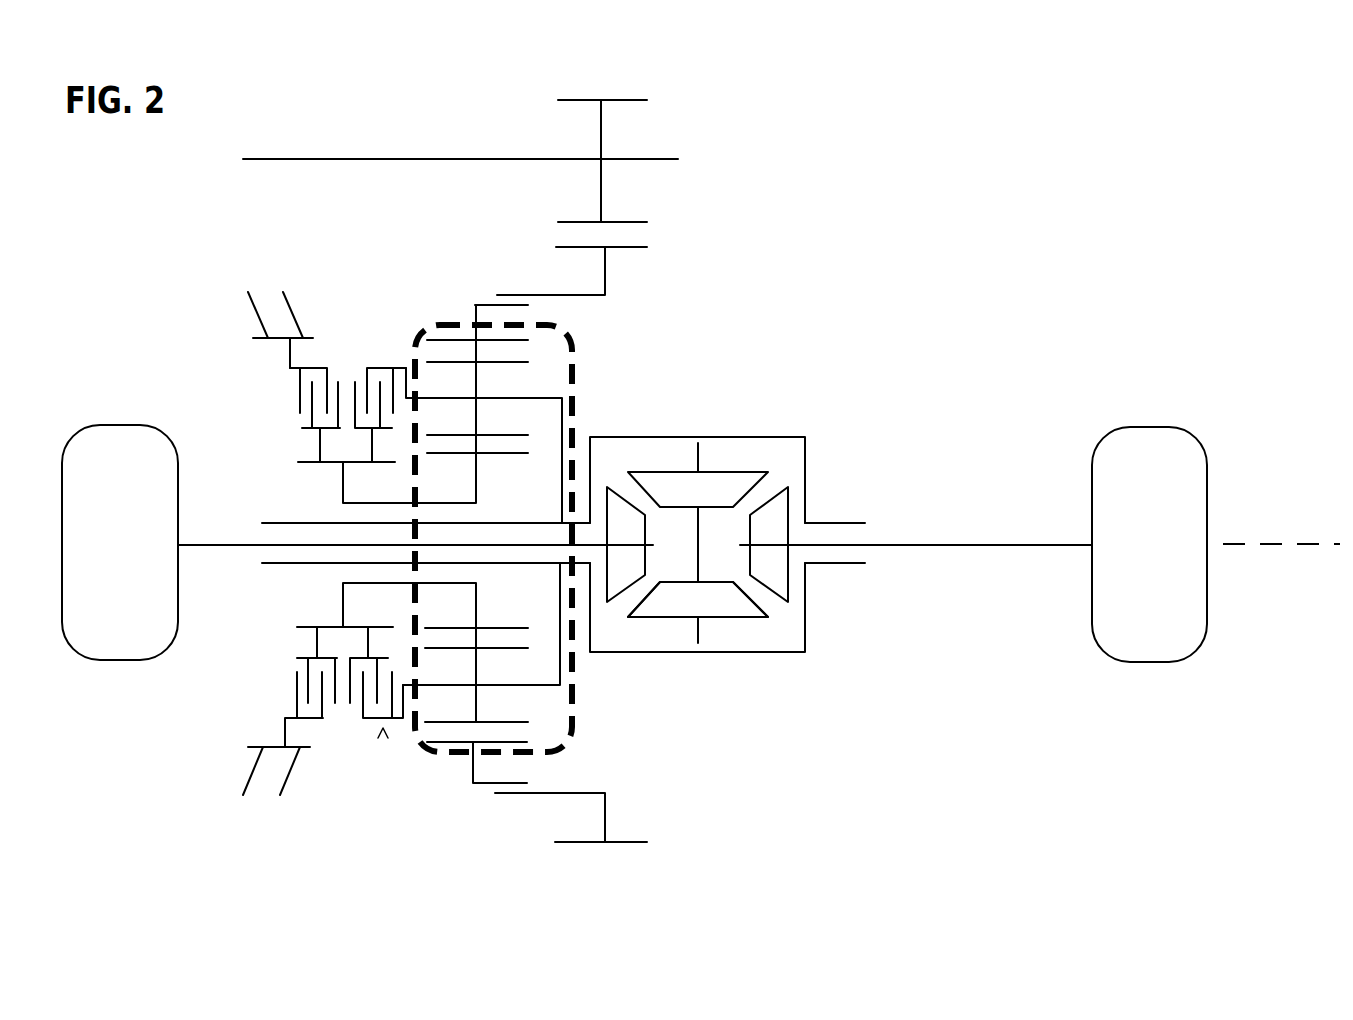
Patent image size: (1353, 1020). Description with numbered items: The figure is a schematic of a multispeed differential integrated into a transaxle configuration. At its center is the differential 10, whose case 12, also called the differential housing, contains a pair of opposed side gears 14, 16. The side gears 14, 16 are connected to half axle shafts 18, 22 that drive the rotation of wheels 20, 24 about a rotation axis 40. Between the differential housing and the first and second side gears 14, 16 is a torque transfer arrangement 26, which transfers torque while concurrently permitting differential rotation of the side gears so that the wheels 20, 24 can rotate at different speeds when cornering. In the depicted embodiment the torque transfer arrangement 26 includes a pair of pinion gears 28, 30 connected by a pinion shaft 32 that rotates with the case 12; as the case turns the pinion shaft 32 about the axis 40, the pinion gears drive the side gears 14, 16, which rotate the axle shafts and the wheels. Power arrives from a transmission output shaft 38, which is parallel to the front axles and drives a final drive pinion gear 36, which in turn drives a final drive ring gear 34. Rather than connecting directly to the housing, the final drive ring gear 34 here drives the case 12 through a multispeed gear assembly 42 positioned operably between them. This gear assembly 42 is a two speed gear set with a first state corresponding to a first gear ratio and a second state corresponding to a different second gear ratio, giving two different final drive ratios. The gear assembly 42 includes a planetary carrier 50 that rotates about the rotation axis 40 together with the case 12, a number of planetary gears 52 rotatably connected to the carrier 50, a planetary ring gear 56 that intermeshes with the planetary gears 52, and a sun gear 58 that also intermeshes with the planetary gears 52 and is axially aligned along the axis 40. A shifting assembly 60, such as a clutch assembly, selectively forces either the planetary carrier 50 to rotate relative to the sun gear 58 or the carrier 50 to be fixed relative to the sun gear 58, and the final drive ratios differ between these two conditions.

The differential 10 is at (751, 549).
The case 12 is at (770, 435).
The first side gear 14 is at (617, 597).
The second side gear 16 is at (785, 578).
The half axle shaft 18 is at (211, 545).
The wheel 20 is at (118, 428).
The half axle shaft 22 is at (1050, 543).
The wheel 24 is at (1150, 427).
The torque transfer arrangement 26 is at (748, 625).
The pinion gear 28 is at (732, 472).
The pinion gear 30 is at (667, 620).
The pinion shaft 32 is at (692, 457).
The final drive ring gear 34 is at (605, 275).
The final drive pinion gear 36 is at (635, 98).
The transmission output shaft 38 is at (502, 160).
The rotation axis 40 is at (1310, 542).
The multispeed gear assembly 42 is at (567, 742).
The planetary carrier 50 is at (567, 430).
The planetary gears 52 is at (517, 435).
The planetary ring gear 56 is at (443, 340).
The sun gear 58 is at (478, 483).
The shifting assembly 60 is at (216, 683).